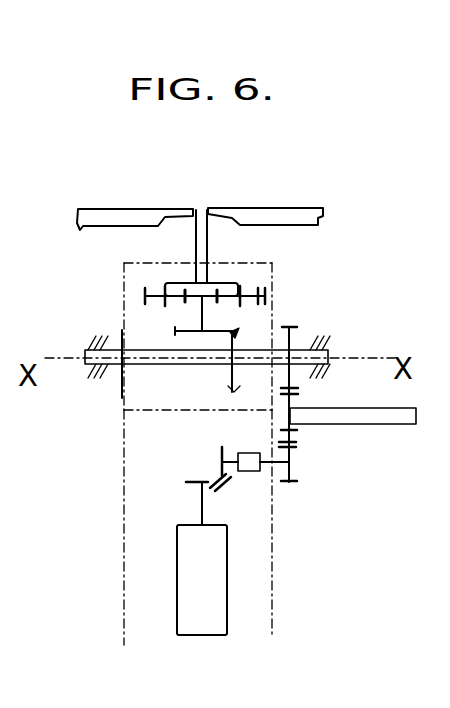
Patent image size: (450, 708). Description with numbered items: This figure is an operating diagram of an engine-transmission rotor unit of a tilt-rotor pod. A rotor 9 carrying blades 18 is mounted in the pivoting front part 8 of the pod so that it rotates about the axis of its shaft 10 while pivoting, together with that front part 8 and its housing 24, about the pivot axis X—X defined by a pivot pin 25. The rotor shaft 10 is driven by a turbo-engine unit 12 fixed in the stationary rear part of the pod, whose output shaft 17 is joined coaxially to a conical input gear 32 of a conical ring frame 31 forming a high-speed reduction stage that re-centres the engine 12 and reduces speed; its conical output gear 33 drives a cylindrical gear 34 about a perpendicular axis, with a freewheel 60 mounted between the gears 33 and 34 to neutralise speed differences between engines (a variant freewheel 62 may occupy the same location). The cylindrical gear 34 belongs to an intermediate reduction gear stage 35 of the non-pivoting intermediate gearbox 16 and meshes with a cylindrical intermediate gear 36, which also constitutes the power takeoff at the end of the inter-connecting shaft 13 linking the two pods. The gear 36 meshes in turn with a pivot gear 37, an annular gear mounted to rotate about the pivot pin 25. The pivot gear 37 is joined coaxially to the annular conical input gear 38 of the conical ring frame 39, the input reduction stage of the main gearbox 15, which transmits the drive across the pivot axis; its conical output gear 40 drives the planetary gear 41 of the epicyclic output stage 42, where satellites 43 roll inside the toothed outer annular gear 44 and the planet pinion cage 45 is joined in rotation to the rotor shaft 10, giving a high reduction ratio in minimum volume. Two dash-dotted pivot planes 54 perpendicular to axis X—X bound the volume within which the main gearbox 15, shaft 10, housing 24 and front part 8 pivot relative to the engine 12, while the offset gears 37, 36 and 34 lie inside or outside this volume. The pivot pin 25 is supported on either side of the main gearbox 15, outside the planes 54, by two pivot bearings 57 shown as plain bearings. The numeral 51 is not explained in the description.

The pivoting front part of the pod 8 is at (136, 328).
The rotor 9 is at (226, 190).
The rotor shaft 10 is at (194, 210).
The turbo-engine unit 12 is at (217, 594).
The inter-connecting shaft 13 is at (370, 420).
The main gearbox 15 is at (231, 286).
The intermediate gearbox 16 is at (302, 491).
The output shaft 17 is at (206, 506).
The blades 18 is at (112, 217).
The housing 24 is at (122, 271).
The pivot pin 25 is at (93, 371).
The conical ring frame 31 is at (197, 474).
The conical input gear 32 is at (184, 482).
The conical output gear 33 is at (223, 444).
The cylindrical gear 34 is at (294, 470).
The intermediate reduction gear stage 35 is at (310, 399).
The cylindrical intermediate gear 36 is at (293, 430).
The pivot gear 37 is at (313, 336).
The conical input gear 38 is at (232, 391).
The conical ring frame 39 is at (218, 344).
The conical output gear 40 is at (177, 332).
The planetary gear 41 is at (210, 300).
The epicyclic output reduction gear stage 42 is at (284, 292).
The satellites 43 is at (254, 278).
The toothed outer annular gear 44 is at (270, 284).
The planet pinion cage 45 is at (180, 283).
The element 51 is at (7, 604).
The pivot planes 54 is at (122, 643).
The pivot bearings 57 is at (86, 338).
The freewheel 60 is at (257, 472).
The freewheel 62 is at (15, 570).